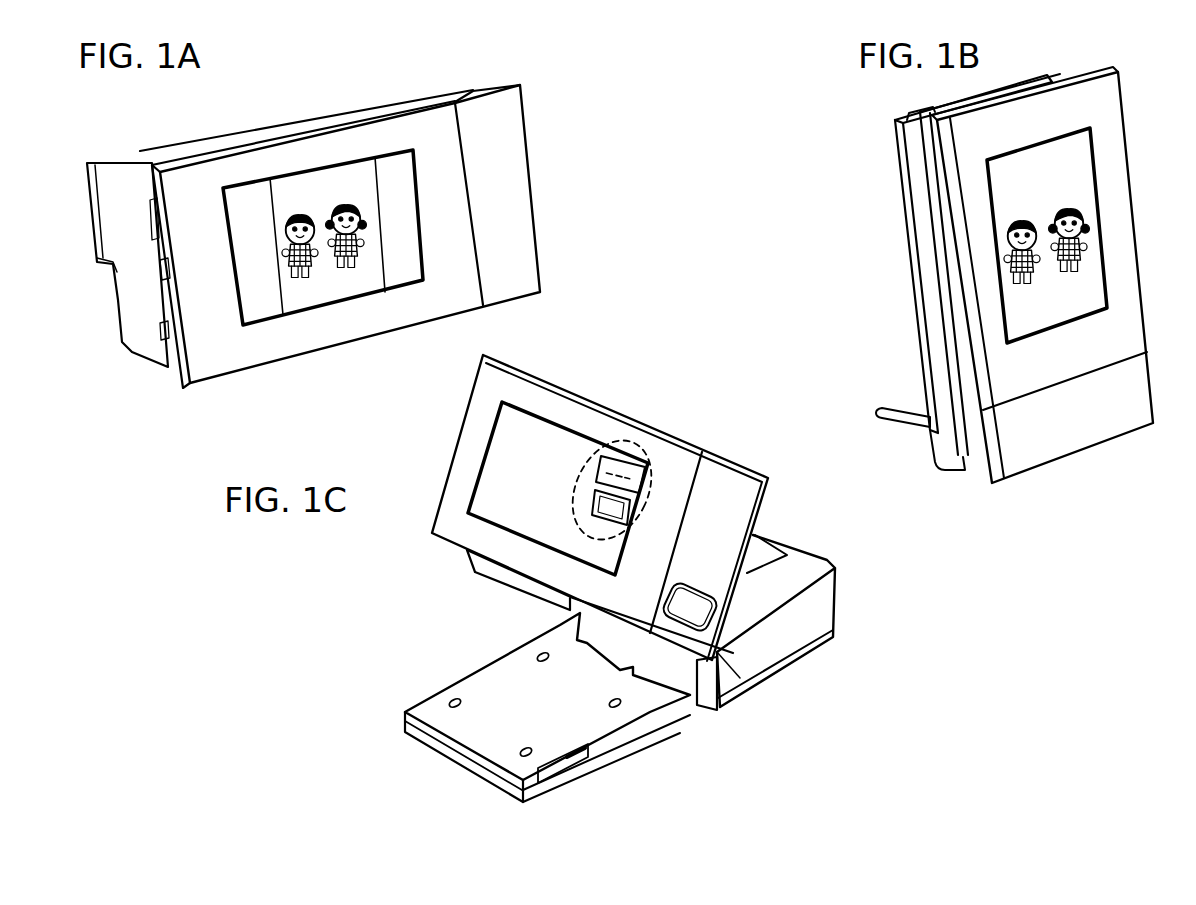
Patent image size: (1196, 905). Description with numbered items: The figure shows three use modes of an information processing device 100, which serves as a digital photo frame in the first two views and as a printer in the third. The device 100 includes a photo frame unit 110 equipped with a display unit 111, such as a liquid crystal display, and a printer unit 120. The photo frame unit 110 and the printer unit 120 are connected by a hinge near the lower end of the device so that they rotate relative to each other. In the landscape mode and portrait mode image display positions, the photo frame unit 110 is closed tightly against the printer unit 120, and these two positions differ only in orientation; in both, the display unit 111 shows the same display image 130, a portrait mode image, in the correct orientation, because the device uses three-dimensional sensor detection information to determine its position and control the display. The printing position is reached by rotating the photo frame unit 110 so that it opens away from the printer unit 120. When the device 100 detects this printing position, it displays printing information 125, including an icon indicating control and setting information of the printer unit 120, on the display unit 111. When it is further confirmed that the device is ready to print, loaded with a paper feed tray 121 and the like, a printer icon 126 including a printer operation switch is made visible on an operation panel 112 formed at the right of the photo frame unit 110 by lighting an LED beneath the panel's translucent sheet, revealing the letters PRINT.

In FIG. 1A, the information processing device 100 is at (560, 155).
In FIG. 1A, the photo frame unit 110 is at (296, 332).
In FIG. 1B, the photo frame unit 110 is at (1014, 275).
In FIG. 1C, the photo frame unit 110 is at (462, 470).
In FIG. 1A, the display unit 111 is at (410, 260).
In FIG. 1C, the display unit 111 is at (530, 430).
In FIG. 1C, the operation panel 112 is at (720, 540).
In FIG. 1A, the printer unit 120 is at (147, 350).
In FIG. 1C, the printer unit 120 is at (800, 620).
In FIG. 1C, the paper feed tray 121 is at (478, 685).
In FIG. 1C, the printing information 125 is at (642, 448).
In FIG. 1C, the printer icon 126 is at (720, 660).
In FIG. 1A, the display image 130 is at (330, 185).
In FIG. 1B, the display image 130 is at (1084, 192).